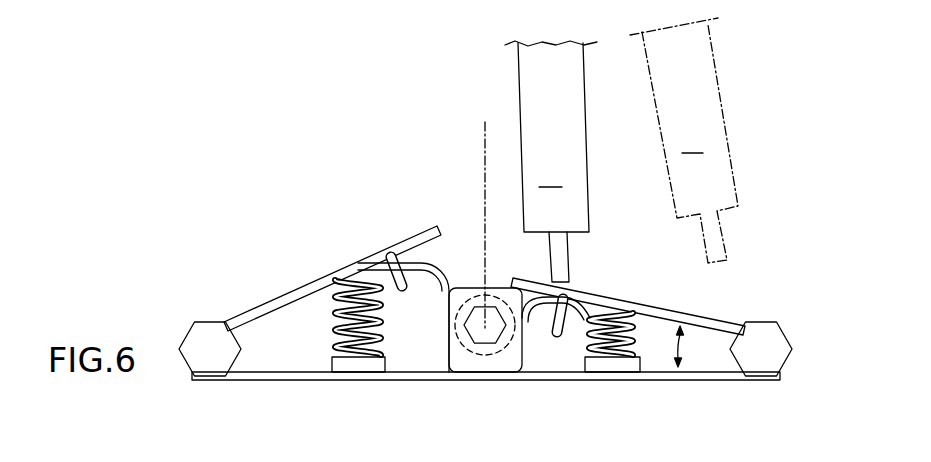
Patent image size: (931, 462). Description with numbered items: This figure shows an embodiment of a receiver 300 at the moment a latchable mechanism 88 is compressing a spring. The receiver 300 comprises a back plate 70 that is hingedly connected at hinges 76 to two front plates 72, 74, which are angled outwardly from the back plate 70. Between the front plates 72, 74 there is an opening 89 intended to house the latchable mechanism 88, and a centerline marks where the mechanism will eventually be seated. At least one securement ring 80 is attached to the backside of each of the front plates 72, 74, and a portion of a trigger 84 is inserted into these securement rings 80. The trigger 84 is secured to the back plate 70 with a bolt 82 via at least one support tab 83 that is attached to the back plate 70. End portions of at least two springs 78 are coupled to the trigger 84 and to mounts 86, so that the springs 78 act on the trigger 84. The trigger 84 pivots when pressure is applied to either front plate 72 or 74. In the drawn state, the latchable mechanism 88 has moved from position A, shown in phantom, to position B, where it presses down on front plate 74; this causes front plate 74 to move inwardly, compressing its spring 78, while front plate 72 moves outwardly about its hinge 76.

The receiver 300 is at (240, 185).
The back plate 70 is at (278, 380).
The front plate 72 is at (322, 279).
The front plate 74 is at (637, 305).
The hinge 76 is at (200, 310).
The spring 78 is at (337, 327).
The securement ring 80 is at (392, 262).
The bolt 82 is at (472, 338).
The support tab 83 is at (467, 363).
The trigger 84 is at (430, 267).
The mount 86 is at (352, 367).
The latchable mechanism 88 is at (538, 86).
The opening 89 is at (470, 263).